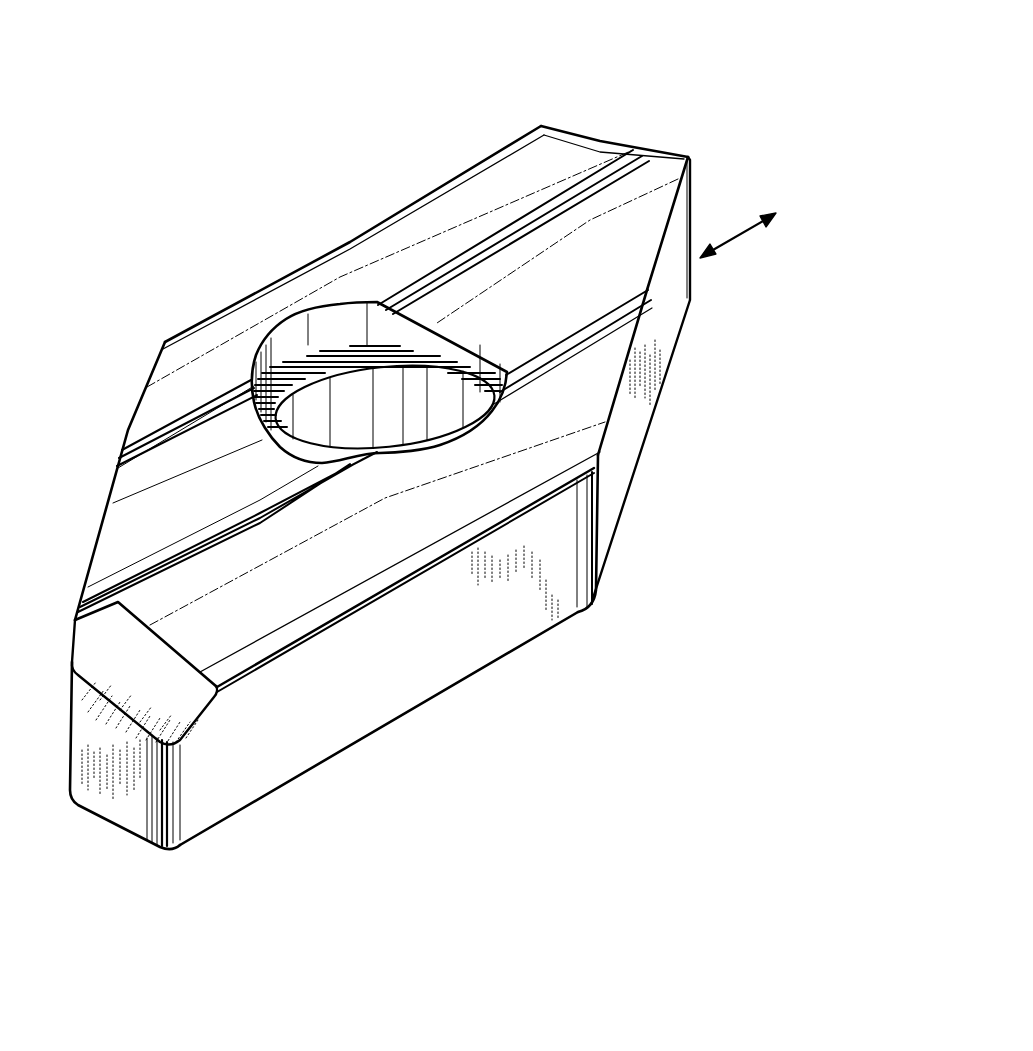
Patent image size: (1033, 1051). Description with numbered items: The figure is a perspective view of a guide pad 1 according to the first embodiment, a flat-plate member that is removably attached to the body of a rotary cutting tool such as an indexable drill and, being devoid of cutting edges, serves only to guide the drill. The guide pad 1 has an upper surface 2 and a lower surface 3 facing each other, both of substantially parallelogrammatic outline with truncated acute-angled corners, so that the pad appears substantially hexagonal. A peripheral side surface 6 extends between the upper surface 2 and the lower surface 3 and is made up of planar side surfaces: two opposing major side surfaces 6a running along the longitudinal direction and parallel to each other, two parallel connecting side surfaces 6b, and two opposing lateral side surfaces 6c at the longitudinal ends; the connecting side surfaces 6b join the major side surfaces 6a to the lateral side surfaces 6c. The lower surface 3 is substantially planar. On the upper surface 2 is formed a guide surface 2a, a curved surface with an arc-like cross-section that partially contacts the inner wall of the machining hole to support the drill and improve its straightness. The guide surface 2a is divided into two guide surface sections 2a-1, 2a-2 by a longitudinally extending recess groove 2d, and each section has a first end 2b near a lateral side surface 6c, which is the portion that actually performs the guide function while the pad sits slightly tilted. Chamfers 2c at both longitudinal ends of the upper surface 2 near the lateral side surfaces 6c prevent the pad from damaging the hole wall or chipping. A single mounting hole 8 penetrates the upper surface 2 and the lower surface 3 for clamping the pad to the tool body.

The guide pad 1 is at (644, 64).
The upper surface 2 is at (473, 205).
The guide surface 2a is at (335, 266).
The guide surface section 2a-1 is at (408, 547).
The guide surface section 2a-2 is at (250, 317).
The first end 2b is at (577, 152).
The chamfer 2c is at (668, 148).
The recess groove 2d is at (643, 231).
The lower surface 3 is at (441, 698).
The peripheral side surface 6 is at (405, 688).
The major side surface 6a is at (527, 612).
The connecting side surface 6b is at (617, 438).
The lateral side surface 6c is at (112, 800).
The mounting hole 8 is at (350, 398).